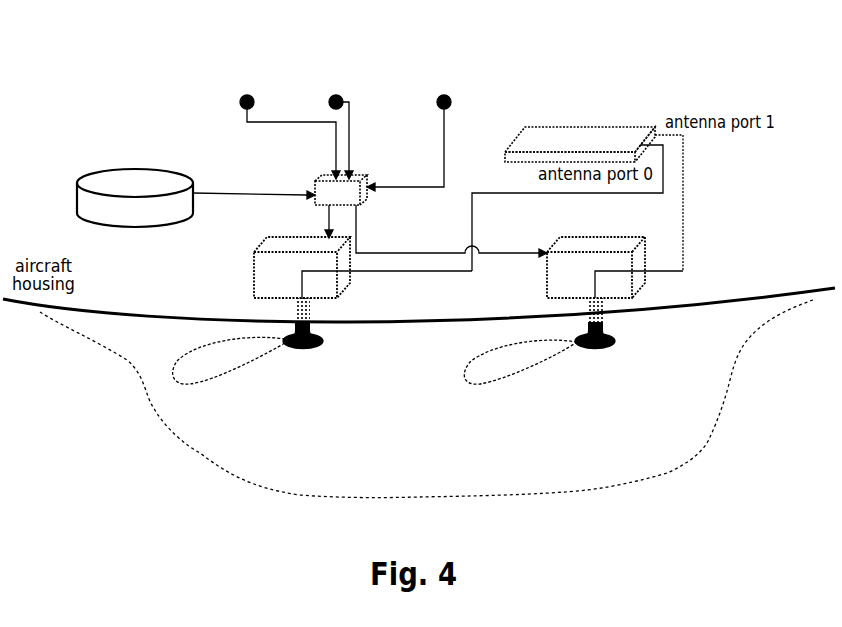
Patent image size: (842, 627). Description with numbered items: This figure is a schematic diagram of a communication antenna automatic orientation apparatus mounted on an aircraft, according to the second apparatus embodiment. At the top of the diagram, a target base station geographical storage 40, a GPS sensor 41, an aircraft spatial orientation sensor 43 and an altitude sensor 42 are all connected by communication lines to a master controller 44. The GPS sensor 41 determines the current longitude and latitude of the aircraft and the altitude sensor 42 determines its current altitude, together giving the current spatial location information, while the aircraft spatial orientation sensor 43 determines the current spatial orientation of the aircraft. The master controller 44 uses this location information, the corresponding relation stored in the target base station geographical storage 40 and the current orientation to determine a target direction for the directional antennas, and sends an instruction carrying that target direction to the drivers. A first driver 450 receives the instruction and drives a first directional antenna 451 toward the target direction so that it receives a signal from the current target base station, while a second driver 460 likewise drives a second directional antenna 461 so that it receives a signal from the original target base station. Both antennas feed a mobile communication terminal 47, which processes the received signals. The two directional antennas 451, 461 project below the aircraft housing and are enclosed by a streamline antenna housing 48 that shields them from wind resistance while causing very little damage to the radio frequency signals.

The target base station geographical storage 40 is at (189, 161).
The GPS sensor 41 is at (275, 109).
The altitude sensor 42 is at (433, 117).
The aircraft spatial orientation sensor 43 is at (353, 99).
The master controller 44 is at (389, 194).
The mobile communication terminal 47 is at (577, 163).
The antenna housing 48 is at (420, 399).
The first driver 450 is at (315, 268).
The first directional antenna 451 is at (277, 352).
The second driver 460 is at (605, 254).
The second directional antenna 461 is at (575, 353).